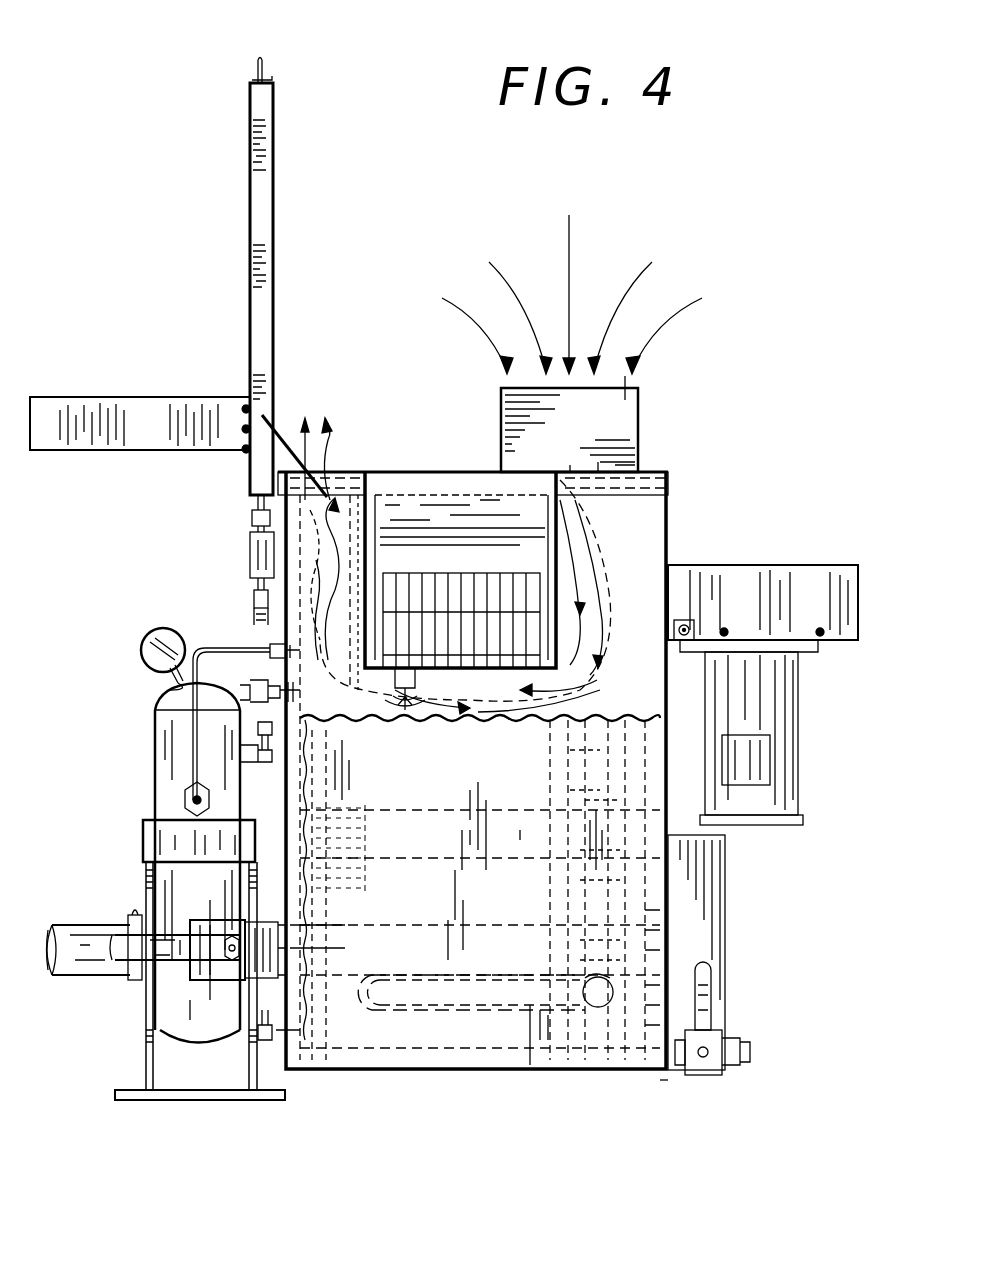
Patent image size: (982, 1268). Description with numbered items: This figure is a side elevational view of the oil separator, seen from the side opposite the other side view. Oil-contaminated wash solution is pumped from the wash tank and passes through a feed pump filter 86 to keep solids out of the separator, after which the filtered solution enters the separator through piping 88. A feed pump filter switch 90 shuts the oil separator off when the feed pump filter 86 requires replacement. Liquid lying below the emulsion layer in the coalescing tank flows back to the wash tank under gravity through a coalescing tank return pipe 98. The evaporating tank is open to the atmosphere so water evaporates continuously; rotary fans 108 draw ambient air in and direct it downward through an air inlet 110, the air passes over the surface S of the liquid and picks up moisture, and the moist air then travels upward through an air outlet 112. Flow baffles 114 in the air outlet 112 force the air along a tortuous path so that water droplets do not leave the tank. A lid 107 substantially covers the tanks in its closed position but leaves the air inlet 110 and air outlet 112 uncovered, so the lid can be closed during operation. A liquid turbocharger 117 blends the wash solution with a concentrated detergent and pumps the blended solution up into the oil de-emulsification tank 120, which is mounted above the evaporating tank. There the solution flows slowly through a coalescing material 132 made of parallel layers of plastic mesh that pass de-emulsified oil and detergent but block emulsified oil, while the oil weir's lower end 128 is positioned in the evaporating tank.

The feed pump filter 86 is at (160, 762).
The piping 88 is at (232, 652).
The feed pump filter switch 90 is at (248, 548).
The coalescing tank return pipe 98 is at (100, 975).
The lid 107 is at (268, 178).
The rotary fans 108 is at (640, 428).
The air inlet 110 is at (672, 518).
The air outlet 112 is at (336, 475).
The flow baffles 114 is at (250, 515).
The liquid turbocharger 117 is at (745, 565).
The oil de-emulsification tank 120 is at (420, 505).
The lower end 128 is at (405, 718).
The coalescing material 132 is at (476, 578).
The surface S is at (492, 722).